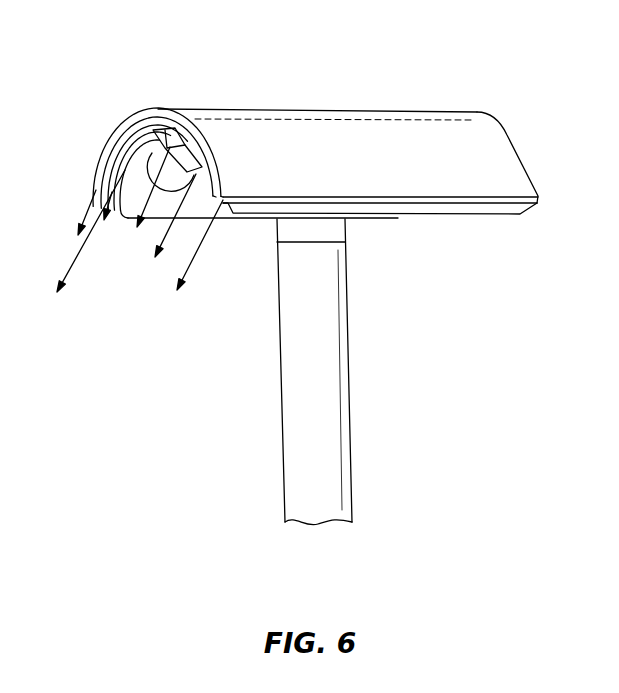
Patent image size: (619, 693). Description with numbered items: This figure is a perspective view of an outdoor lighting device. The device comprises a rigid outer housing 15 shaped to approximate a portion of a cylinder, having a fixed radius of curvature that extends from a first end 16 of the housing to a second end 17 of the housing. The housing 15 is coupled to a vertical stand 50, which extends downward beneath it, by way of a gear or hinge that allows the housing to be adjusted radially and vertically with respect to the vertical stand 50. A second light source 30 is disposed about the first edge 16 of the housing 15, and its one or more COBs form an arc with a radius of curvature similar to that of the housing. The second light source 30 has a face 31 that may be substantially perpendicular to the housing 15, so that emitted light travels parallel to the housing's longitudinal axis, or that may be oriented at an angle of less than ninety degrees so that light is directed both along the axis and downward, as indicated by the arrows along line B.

The outer housing 15 is at (263, 128).
The first end 16 is at (118, 128).
The second end 17 is at (513, 138).
The second light source 30 is at (132, 123).
The face 31 is at (112, 152).
The vertical stand 50 is at (327, 390).